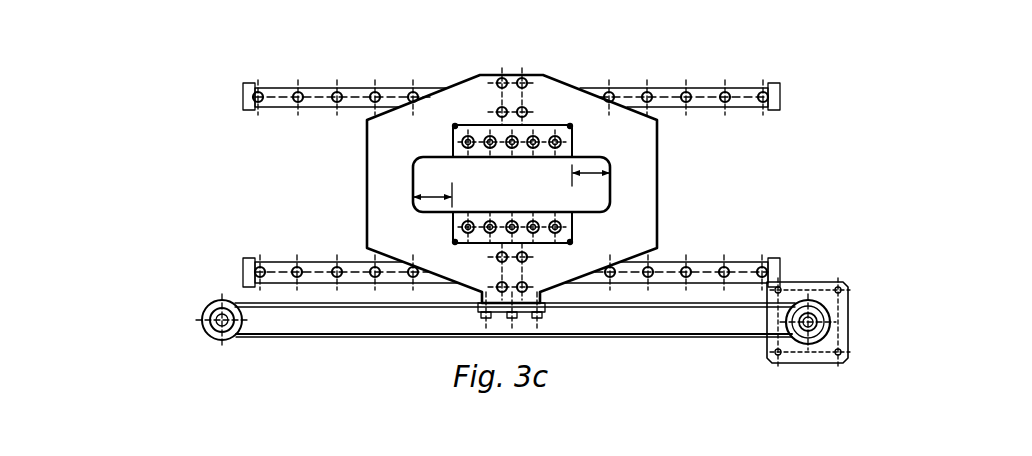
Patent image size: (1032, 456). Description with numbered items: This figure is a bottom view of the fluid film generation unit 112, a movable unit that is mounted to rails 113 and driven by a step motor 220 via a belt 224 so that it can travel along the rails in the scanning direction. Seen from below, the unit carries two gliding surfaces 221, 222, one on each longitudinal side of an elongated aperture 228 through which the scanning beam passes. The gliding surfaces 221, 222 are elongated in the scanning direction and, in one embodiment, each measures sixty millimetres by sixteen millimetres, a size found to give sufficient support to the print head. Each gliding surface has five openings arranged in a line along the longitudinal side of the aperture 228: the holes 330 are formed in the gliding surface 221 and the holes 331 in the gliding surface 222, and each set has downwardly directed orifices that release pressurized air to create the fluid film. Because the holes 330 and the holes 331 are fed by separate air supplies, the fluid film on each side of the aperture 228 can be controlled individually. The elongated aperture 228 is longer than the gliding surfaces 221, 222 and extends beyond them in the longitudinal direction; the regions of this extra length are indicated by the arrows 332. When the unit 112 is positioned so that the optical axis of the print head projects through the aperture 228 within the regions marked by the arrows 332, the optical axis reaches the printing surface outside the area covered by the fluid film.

The fluid film generation unit 112 is at (378, 236).
The rails 113 is at (670, 97).
The step motor 220 is at (825, 290).
The gliding surface 221 is at (455, 125).
The gliding surface 222 is at (568, 218).
The belt 224 is at (335, 338).
The elongated aperture 228 is at (425, 170).
The holes 330 is at (555, 149).
The holes 331 is at (553, 221).
The arrows 332 is at (432, 192).